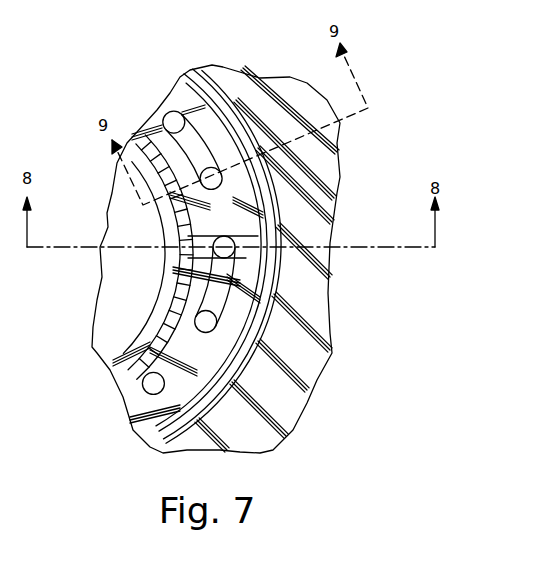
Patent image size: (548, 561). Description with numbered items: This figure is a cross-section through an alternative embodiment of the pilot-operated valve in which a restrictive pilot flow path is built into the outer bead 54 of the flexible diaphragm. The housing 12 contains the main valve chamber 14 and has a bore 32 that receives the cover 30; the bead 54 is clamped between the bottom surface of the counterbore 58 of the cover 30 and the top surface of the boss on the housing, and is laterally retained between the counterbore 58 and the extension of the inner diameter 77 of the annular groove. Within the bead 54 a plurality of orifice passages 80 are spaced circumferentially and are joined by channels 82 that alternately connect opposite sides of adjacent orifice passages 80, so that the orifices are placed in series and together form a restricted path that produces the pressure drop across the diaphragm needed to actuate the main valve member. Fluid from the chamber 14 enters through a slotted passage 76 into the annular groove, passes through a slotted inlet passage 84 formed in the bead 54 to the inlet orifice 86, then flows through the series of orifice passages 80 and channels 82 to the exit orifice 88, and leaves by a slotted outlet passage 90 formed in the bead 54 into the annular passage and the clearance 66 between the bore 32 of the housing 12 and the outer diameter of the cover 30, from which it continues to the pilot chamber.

The housing 12 is at (307, 359).
The main valve chamber 14 is at (128, 220).
The cover 30 is at (190, 82).
The bore 32 is at (212, 167).
The bead 54 is at (178, 102).
The counterbore 58 is at (245, 202).
The clearance 66 is at (155, 445).
The slotted passage 76 is at (187, 231).
The inner diameter 77 is at (157, 363).
The orifice passages 80 is at (240, 309).
The channels 82 is at (240, 279).
The slotted inlet passage 84 is at (189, 246).
The inlet orifice 86 is at (240, 237).
The exit orifice 88 is at (213, 155).
The slotted outlet passage 90 is at (200, 138).